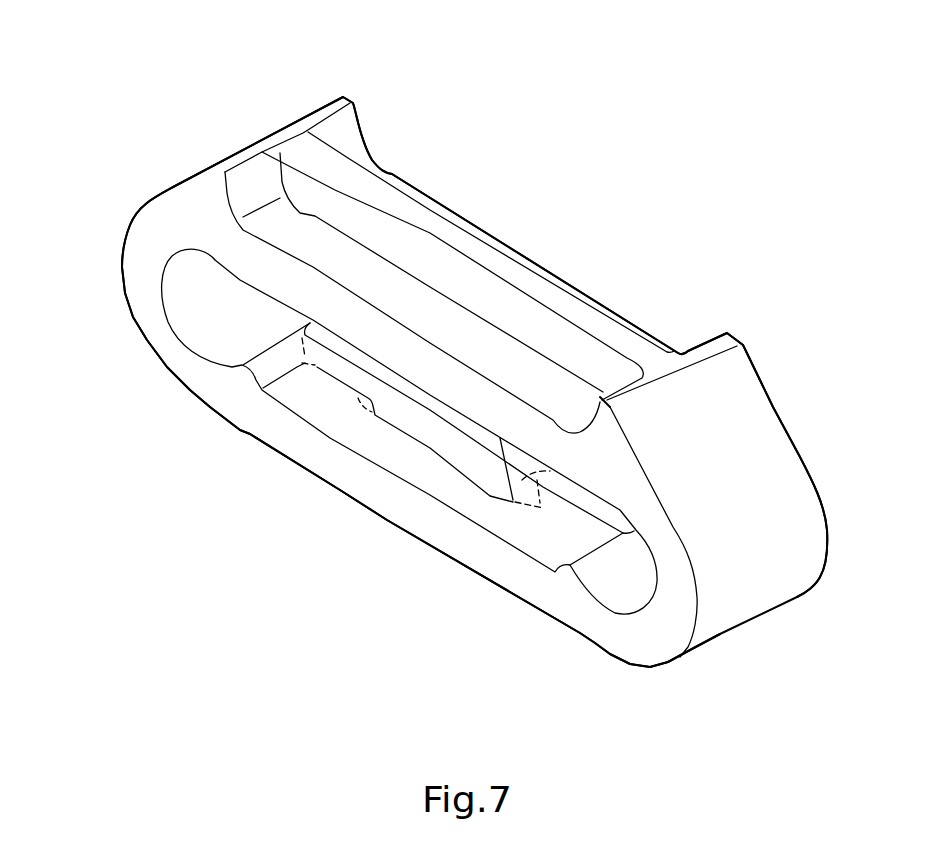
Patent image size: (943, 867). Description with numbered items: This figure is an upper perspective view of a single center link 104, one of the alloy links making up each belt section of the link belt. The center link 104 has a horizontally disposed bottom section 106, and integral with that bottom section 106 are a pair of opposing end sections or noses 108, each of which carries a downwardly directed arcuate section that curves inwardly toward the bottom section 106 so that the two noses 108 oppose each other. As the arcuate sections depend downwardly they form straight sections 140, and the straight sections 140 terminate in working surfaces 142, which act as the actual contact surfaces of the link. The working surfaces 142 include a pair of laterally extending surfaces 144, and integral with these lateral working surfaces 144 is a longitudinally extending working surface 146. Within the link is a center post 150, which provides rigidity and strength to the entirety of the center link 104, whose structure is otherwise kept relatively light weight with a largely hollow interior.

The center link 104 is at (491, 165).
The bottom section 106 is at (293, 467).
The end sections or noses 108 is at (135, 216).
The straight sections 140 is at (198, 172).
The working surfaces 142 is at (248, 153).
The laterally extending surfaces 144 is at (320, 112).
The longitudinally extending working surface 146 is at (550, 284).
The center post 150 is at (450, 433).